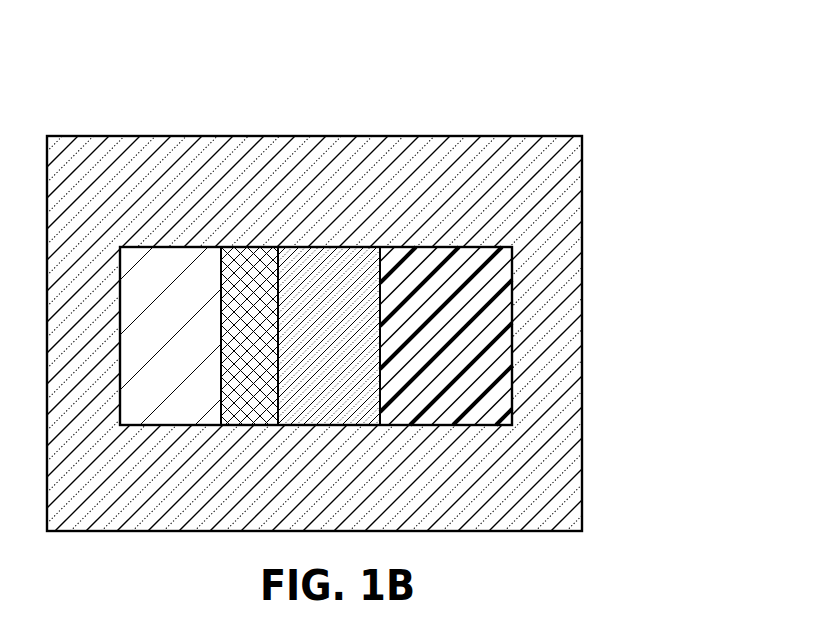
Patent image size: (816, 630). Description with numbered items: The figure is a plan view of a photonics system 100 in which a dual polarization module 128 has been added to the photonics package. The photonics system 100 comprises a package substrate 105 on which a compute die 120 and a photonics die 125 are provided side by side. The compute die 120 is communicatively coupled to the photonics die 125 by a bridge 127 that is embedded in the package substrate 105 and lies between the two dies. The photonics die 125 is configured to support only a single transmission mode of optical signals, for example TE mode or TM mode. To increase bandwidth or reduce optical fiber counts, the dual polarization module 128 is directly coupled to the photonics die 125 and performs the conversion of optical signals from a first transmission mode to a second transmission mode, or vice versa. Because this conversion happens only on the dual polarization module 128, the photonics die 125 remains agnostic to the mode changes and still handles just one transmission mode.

The photonics system 100 is at (556, 46).
The package substrate 105 is at (566, 490).
The compute die 120 is at (157, 272).
The photonics die 125 is at (341, 268).
The bridge 127 is at (258, 265).
The dual polarization module 128 is at (450, 268).